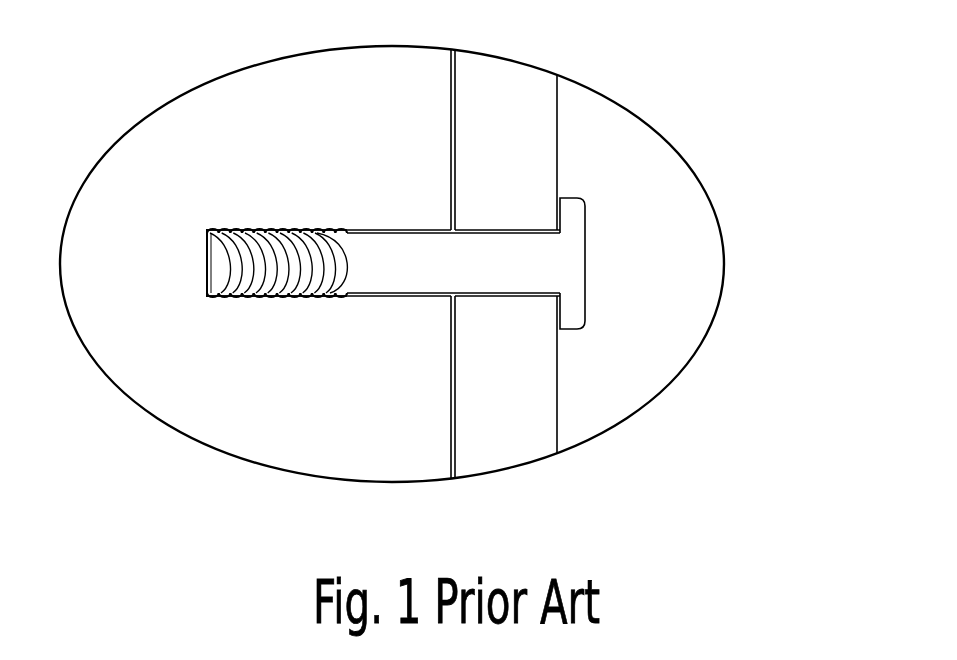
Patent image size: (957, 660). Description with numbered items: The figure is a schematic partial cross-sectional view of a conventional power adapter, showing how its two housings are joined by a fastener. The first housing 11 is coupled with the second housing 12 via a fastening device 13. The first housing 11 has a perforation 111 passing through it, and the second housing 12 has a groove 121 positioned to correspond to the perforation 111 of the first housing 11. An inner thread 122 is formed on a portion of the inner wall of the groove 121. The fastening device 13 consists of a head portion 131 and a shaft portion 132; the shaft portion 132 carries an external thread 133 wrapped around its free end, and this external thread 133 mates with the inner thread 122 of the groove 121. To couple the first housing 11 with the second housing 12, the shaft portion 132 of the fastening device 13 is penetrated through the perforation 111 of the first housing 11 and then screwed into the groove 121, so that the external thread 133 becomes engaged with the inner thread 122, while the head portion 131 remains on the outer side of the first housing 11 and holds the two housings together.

The first housing 11 is at (520, 158).
The perforation 111 is at (510, 230).
The second housing 12 is at (150, 158).
The groove 121 is at (420, 230).
The inner thread 122 is at (270, 228).
The fastening device 13 is at (833, 230).
The head portion 131 is at (570, 268).
The shaft portion 132 is at (457, 262).
The external thread 133 is at (307, 262).